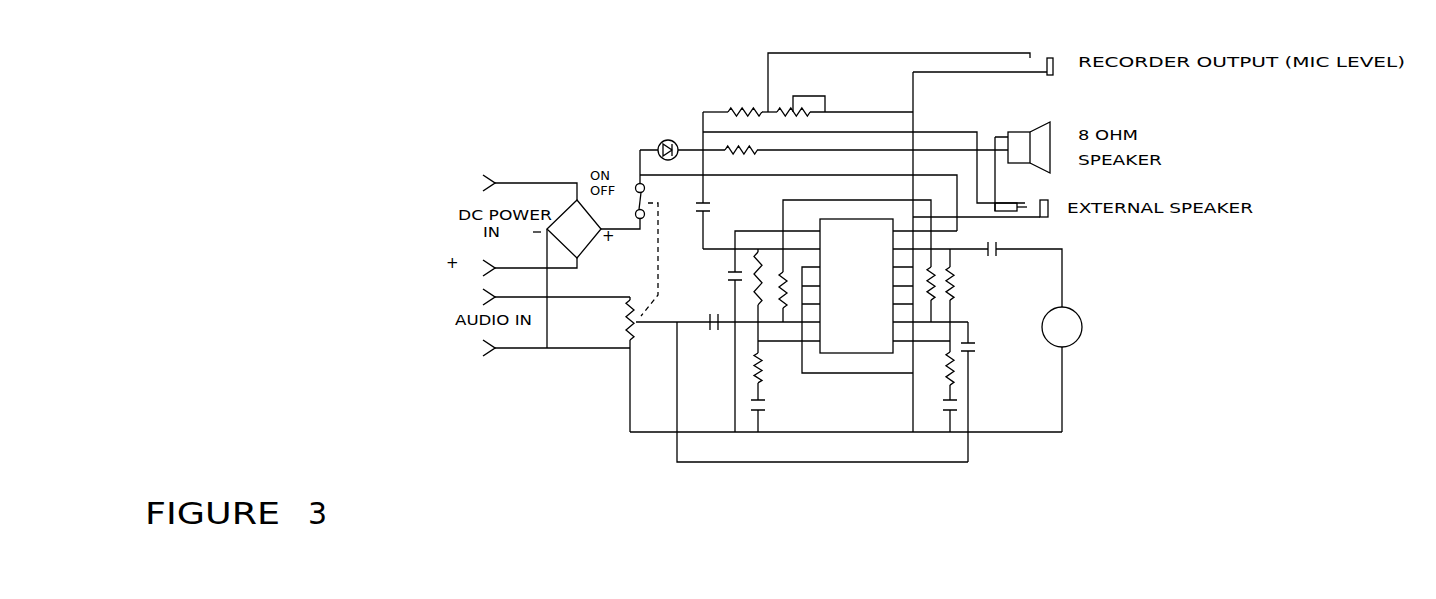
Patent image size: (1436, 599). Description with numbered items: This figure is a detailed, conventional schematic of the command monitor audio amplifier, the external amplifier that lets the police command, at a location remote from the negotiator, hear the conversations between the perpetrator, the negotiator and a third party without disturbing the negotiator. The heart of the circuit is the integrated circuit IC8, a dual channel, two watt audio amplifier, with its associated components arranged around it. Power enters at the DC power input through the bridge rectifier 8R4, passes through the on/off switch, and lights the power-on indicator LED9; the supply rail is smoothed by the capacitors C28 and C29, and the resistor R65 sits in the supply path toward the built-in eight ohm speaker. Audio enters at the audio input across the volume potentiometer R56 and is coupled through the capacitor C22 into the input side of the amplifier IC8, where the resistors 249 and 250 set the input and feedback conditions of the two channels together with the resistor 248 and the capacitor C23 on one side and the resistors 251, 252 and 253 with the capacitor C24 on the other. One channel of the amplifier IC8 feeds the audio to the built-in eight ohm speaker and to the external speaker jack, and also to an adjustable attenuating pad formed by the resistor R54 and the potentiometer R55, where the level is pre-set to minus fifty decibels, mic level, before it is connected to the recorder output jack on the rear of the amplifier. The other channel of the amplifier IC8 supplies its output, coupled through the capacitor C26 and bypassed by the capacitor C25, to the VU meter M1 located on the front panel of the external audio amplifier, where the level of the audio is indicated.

The resistor 248 (2K) 248 is at (770, 375).
The resistor 249 (100K) 249 is at (751, 301).
The resistor 250 (100K) 250 is at (847, 261).
The resistor 251 (100K) 251 is at (931, 292).
The resistor 252 (100K) 252 is at (963, 300).
The resistor 253 (2K) 253 is at (947, 376).
The resistor R54 (10K) R54 is at (740, 89).
The potentiometer R55 (10K) R55 is at (845, 89).
The volume potentiometer R56 (10K) R56 is at (645, 364).
The resistor R65 (33 ohm) R65 is at (866, 170).
The capacitor C22 (.1) C22 is at (822, 388).
The capacitor C23 (5) C23 is at (775, 413).
The capacitor C24 (5) C24 is at (936, 413).
The capacitor C25 (.1) C25 is at (982, 392).
The capacitor C26 (200) C26 is at (1025, 274).
The capacitor C28 (200) C28 is at (717, 215).
The capacitor C29 (200) C29 is at (707, 340).
The dual channel audio amplifier IC8 is at (856, 286).
The power-on indicator LED9 is at (652, 125).
The bridge rectifier 8R4 is at (574, 229).
The VU meter M1 is at (1082, 369).